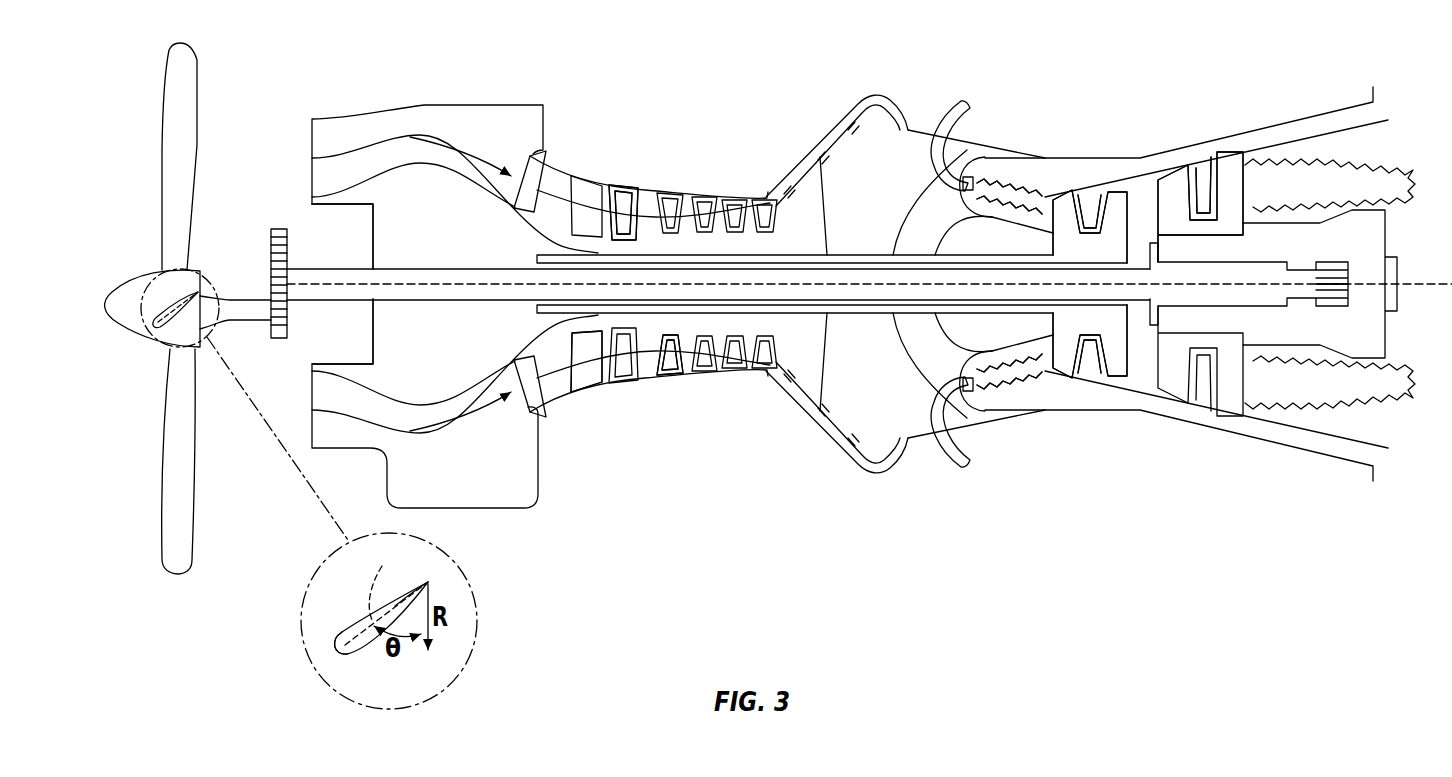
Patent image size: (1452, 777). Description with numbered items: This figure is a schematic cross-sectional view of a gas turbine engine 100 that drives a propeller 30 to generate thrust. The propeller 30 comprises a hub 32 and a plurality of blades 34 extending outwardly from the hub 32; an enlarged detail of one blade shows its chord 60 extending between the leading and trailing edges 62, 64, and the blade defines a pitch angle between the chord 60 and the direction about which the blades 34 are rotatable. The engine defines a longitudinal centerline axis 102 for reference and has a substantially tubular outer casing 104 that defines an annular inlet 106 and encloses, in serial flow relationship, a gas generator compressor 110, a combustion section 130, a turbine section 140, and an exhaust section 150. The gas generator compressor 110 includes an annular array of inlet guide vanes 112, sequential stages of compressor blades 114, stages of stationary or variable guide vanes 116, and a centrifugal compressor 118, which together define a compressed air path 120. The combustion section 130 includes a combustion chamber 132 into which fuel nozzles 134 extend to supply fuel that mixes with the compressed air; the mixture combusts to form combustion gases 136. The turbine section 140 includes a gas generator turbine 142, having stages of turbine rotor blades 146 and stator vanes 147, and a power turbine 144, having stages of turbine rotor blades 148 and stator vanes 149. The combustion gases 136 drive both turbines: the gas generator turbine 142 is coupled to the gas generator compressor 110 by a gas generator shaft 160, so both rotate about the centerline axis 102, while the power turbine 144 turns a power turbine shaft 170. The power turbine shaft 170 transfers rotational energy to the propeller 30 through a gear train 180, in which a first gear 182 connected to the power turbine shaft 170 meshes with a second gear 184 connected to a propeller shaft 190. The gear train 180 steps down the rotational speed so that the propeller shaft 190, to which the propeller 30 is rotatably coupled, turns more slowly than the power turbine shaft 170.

The propeller 30 is at (131, 256).
The hub 32 is at (133, 325).
The blades 34 is at (163, 118).
The chord 60 is at (383, 578).
The leading edge 62 is at (335, 649).
The trailing edge 64 is at (431, 583).
The gas turbine engine 100 is at (309, 506).
The centerline axis 102 is at (388, 277).
The outer casing 104 is at (637, 181).
The annular inlet 106 is at (318, 135).
The gas generator compressor 110 is at (644, 383).
The inlet guide vanes 112 is at (582, 350).
The compressor blades 114 is at (627, 200).
The guide vanes 116 is at (685, 368).
The centrifugal compressor 118 is at (800, 378).
The compressed air path 120 is at (532, 183).
The combustion section 130 is at (930, 414).
The combustion chamber 132 is at (994, 171).
The fuel nozzles 134 is at (968, 112).
The combustion gases 136 is at (1000, 372).
The turbine section 140 is at (1185, 519).
The gas generator turbine 142 is at (1128, 374).
The power turbine 144 is at (1251, 159).
The turbine rotor blades 146 is at (1063, 205).
The stator vanes 147 is at (1095, 203).
The turbine rotor blades 148 is at (1178, 173).
The stator vanes 149 is at (1208, 173).
The exhaust section 150 is at (1345, 471).
The gas generator shaft 160 is at (858, 246).
The power turbine shaft 170 is at (1255, 297).
The gear train 180 is at (291, 249).
The first gear 182 is at (271, 243).
The second gear 184 is at (290, 318).
The propeller shaft 190 is at (240, 312).